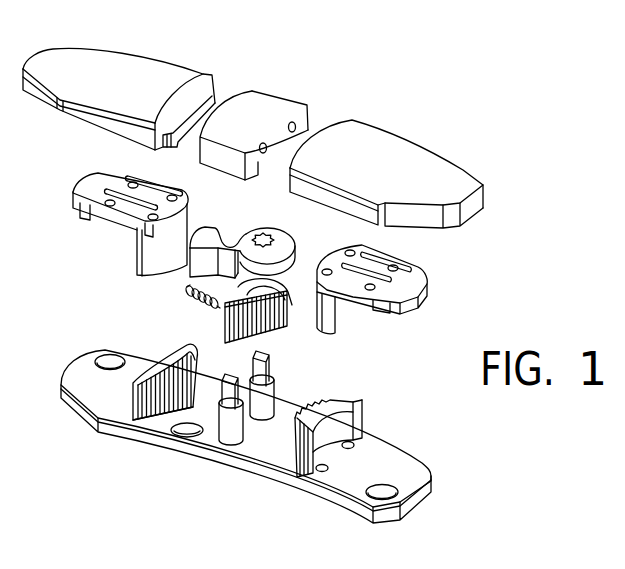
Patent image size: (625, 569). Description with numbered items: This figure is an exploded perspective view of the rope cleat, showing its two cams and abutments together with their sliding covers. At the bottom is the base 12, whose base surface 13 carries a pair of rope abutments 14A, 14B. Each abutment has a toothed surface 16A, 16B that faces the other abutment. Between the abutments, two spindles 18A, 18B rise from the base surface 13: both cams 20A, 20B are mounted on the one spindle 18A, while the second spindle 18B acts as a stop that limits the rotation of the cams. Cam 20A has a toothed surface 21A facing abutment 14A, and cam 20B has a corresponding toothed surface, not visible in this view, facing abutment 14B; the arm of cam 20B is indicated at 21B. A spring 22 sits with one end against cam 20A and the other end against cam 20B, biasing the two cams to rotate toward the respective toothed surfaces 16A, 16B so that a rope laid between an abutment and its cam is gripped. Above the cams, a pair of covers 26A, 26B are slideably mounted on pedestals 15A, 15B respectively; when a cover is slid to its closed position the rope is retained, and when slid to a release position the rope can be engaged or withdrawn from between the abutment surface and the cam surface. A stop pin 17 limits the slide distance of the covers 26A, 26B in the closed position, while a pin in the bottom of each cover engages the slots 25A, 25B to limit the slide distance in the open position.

The base 12 is at (246, 449).
The base surface 13 is at (346, 483).
The rope abutment 14A is at (350, 472).
The rope abutment 14B is at (135, 423).
The pedestal 15A is at (333, 320).
The pedestal 15B is at (155, 251).
The toothed surface 16A is at (292, 452).
The toothed surface 16B is at (107, 422).
The stop pin 17 is at (270, 102).
The spindle 18A is at (266, 395).
The spindle 18B is at (215, 440).
The cam 20A is at (234, 290).
The cam 20B is at (170, 250).
The toothed surface 21A is at (255, 327).
The cam arm 21B is at (207, 277).
The spring 22 is at (188, 293).
The slot 25A is at (403, 298).
The slot 25B is at (104, 223).
The cover 26A is at (372, 150).
The cover 26B is at (120, 75).